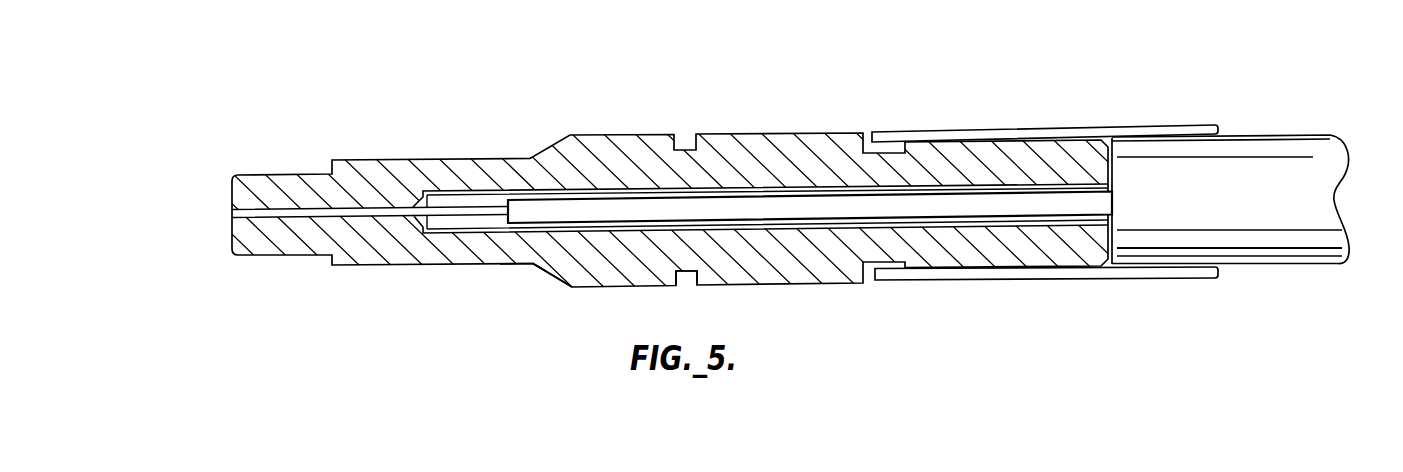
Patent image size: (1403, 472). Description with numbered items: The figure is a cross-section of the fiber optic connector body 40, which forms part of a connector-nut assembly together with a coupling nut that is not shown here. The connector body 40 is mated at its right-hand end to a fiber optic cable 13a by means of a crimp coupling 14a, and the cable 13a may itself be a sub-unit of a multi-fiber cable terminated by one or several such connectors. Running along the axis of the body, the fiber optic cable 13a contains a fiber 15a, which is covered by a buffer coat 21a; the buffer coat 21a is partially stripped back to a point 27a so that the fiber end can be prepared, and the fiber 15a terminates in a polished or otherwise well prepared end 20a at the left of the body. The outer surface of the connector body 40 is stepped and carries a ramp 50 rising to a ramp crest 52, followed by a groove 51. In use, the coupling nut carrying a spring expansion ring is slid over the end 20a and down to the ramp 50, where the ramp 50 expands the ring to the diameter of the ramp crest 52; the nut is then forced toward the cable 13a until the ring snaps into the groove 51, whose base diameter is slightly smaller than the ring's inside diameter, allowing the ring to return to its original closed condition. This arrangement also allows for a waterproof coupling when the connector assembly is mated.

The fiber optic connector body 40 is at (697, 108).
The end 20a is at (232, 213).
The fiber 15a is at (454, 212).
The point 27a is at (503, 226).
The buffer coat 21a is at (810, 205).
The crimp coupling 14a is at (1037, 131).
The fiber optic cable 13a is at (1292, 134).
The ramp 50 is at (533, 265).
The groove 51 is at (687, 288).
The ramp crest 52 is at (572, 289).